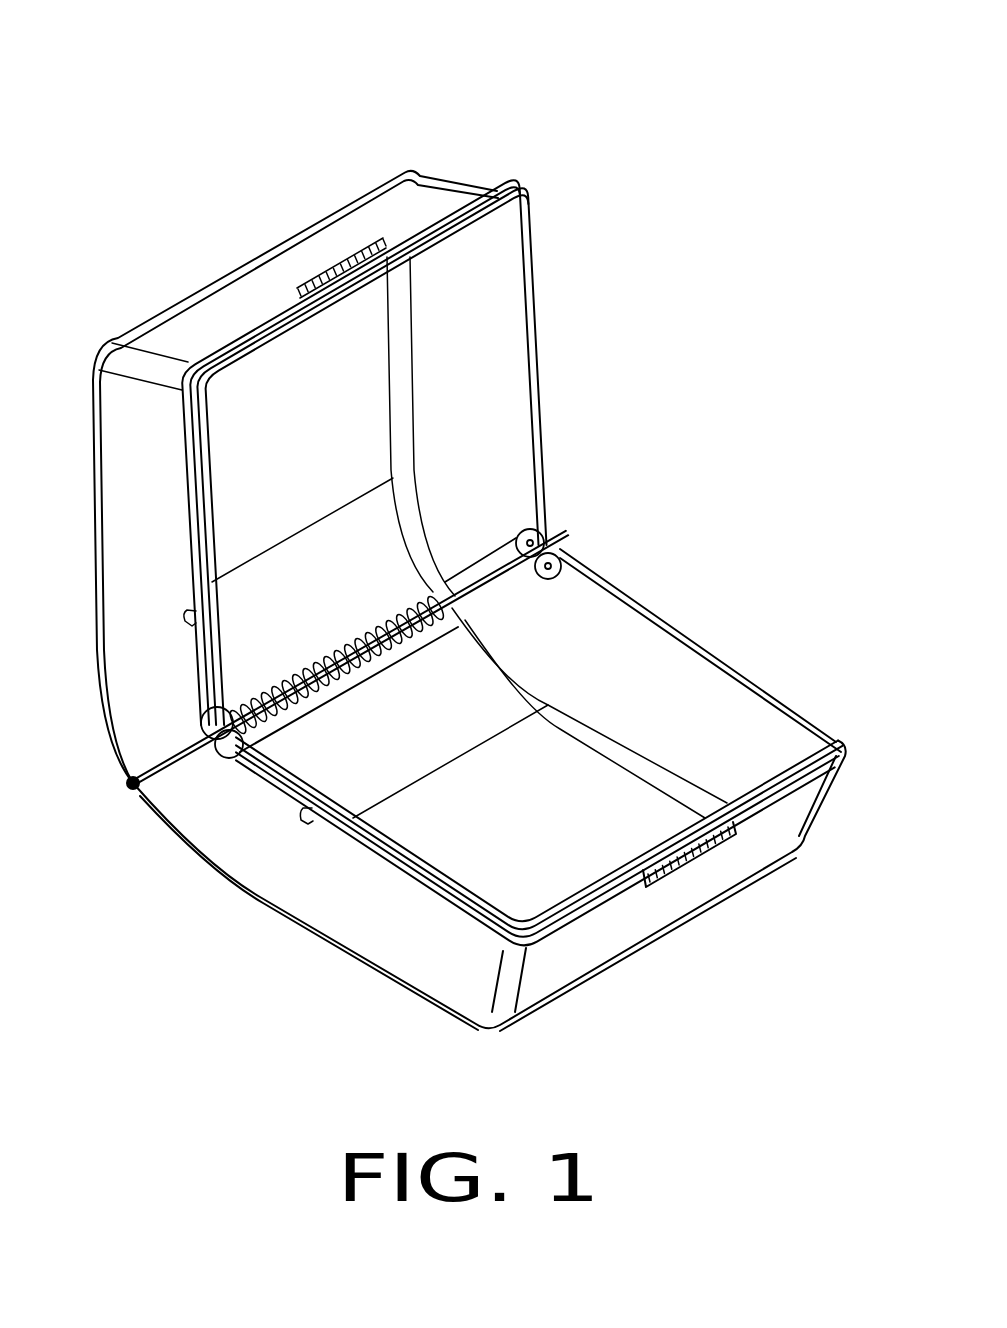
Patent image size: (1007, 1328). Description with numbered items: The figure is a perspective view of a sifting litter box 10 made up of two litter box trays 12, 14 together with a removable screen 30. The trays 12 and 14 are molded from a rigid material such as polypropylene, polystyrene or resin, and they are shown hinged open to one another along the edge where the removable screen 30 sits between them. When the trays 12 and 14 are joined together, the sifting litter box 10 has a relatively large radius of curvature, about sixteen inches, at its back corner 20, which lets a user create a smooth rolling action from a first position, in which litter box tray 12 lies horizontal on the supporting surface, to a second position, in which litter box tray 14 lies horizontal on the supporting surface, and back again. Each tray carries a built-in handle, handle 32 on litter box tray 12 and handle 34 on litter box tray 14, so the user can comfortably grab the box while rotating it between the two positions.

The sifting litter box 10 is at (210, 958).
The litter box tray 12 is at (413, 937).
The litter box tray 14 is at (250, 293).
The back corner 20 is at (128, 790).
The removable screen 30 is at (495, 597).
The built-in handle 32 is at (693, 847).
The built-in handle 34 is at (376, 242).